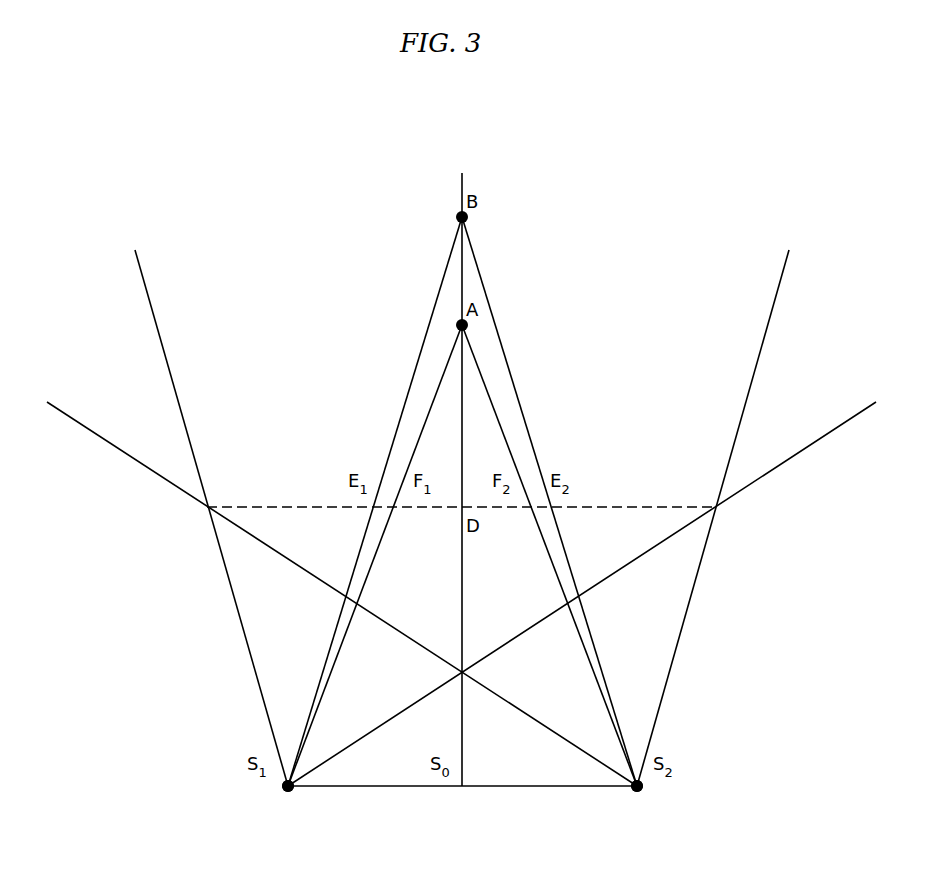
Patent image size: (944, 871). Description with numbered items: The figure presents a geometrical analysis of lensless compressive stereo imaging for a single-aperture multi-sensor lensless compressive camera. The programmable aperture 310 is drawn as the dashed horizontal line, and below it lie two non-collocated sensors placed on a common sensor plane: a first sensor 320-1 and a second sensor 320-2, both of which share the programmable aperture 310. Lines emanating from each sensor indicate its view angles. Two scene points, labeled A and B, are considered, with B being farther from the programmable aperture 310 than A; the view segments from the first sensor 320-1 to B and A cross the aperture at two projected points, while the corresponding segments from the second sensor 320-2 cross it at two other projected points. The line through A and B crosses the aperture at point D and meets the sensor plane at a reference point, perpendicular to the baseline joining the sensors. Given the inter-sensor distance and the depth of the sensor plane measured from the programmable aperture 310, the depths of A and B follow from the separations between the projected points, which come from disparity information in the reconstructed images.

The programmable aperture 310 is at (281, 505).
The first sensor 320-1 is at (283, 795).
The second sensor 320-2 is at (633, 795).